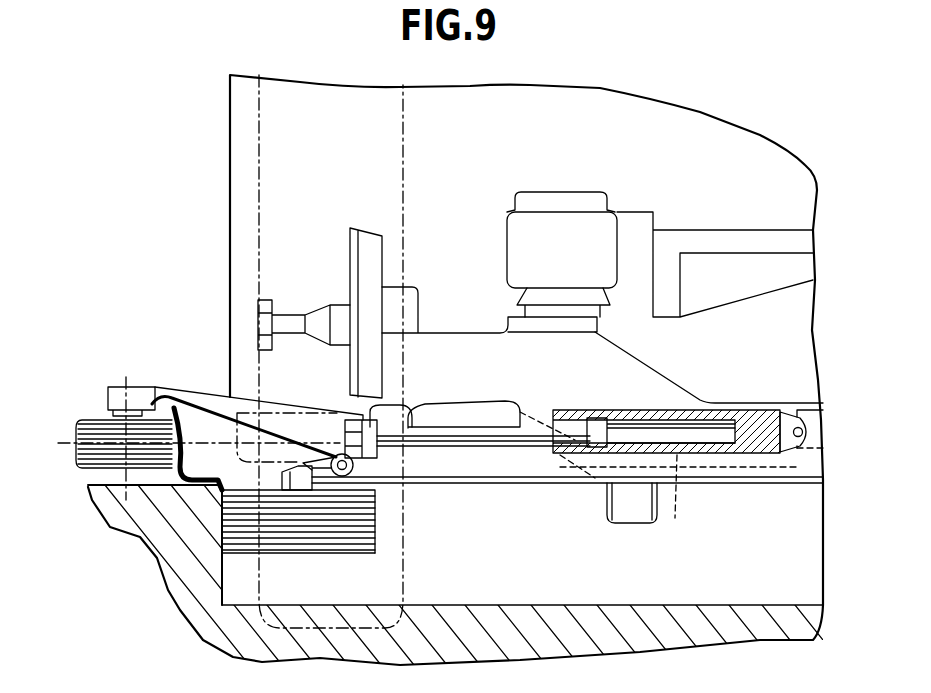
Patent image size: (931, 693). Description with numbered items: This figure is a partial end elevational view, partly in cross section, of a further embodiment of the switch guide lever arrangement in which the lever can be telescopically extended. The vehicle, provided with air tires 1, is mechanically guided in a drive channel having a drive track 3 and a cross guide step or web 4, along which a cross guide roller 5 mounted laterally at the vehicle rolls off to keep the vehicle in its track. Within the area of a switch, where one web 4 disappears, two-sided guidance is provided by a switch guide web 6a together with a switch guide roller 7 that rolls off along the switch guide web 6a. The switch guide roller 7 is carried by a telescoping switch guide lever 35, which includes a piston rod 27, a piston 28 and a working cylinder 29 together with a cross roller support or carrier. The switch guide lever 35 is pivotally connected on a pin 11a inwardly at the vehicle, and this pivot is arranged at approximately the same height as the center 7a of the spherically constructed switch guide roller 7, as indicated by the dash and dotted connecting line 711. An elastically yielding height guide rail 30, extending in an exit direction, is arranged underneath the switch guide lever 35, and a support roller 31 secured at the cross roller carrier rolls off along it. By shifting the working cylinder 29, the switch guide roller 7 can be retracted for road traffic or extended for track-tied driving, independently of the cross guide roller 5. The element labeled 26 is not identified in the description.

The air tires 1 is at (407, 560).
The drive track 3 is at (570, 603).
The cross guide step or web 4 is at (223, 572).
The cross guide roller 5 is at (327, 540).
The switch guide web 6a is at (182, 453).
The switch guide roller 7 is at (87, 467).
The center of the switch guide roller 7a is at (126, 443).
The pin 11a is at (800, 437).
The lever 26 is at (218, 398).
The piston rod 27 is at (475, 433).
The piston 28 is at (608, 430).
The working cylinder 29 is at (682, 412).
The height guide rail 30 is at (440, 487).
The support roller 31 is at (350, 472).
The telescoping switch guide lever 35 is at (502, 447).
The dash and dotted connecting line 711 is at (197, 438).